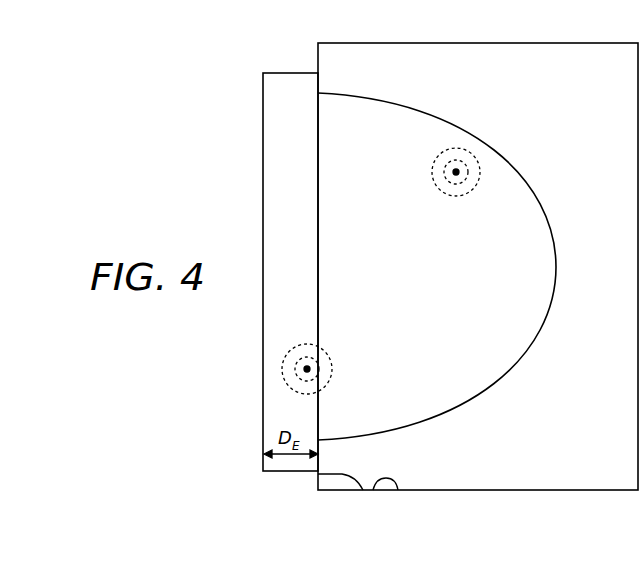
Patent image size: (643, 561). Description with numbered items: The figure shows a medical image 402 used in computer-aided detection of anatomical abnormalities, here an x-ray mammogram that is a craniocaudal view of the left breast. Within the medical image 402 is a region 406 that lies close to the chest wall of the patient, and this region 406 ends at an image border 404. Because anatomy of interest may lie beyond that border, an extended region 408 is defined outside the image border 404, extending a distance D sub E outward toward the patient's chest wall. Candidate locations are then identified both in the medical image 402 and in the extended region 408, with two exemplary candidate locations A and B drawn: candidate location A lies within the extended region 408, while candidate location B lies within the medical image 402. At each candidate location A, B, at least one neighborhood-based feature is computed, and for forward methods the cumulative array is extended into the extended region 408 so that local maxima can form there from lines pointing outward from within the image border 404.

The medical image 402 is at (486, 90).
The image border 404 is at (375, 490).
The region 406 is at (360, 90).
The extended region 408 is at (309, 258).
The candidate location A is at (300, 368).
The candidate location B is at (450, 171).